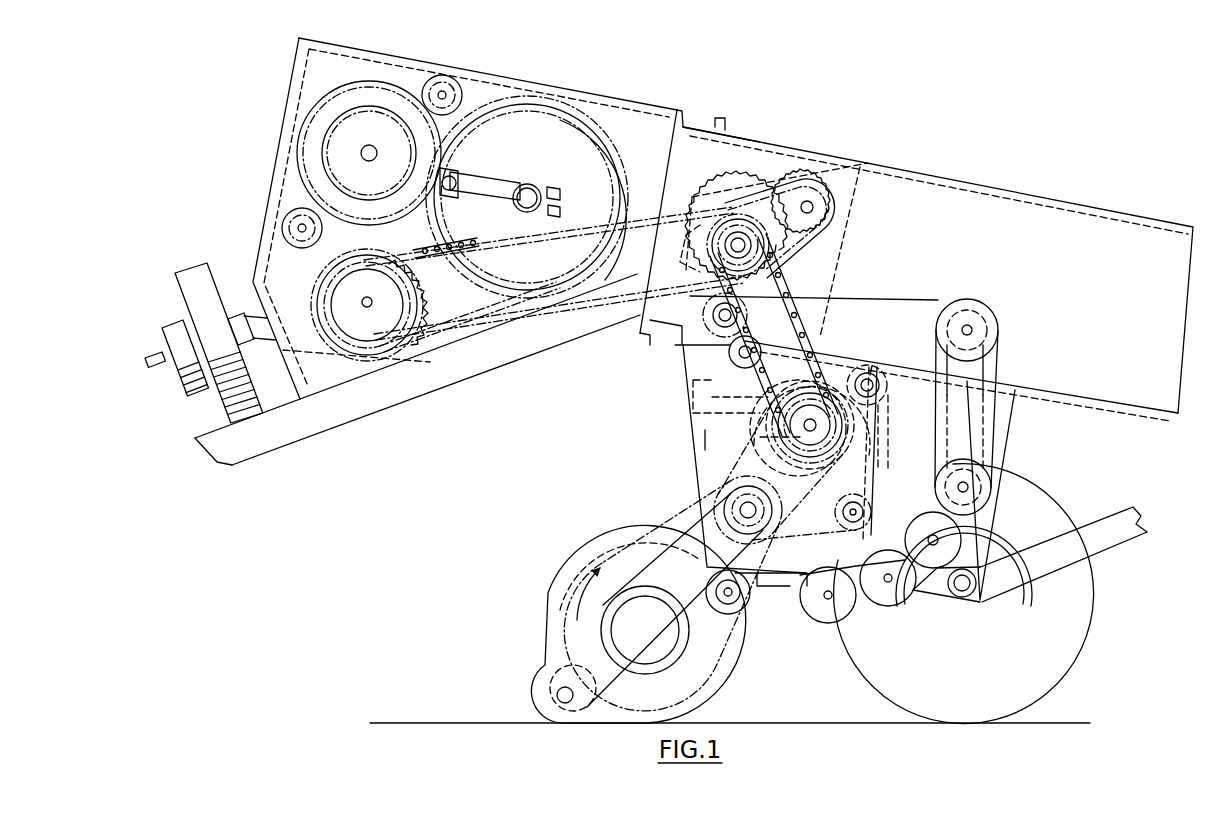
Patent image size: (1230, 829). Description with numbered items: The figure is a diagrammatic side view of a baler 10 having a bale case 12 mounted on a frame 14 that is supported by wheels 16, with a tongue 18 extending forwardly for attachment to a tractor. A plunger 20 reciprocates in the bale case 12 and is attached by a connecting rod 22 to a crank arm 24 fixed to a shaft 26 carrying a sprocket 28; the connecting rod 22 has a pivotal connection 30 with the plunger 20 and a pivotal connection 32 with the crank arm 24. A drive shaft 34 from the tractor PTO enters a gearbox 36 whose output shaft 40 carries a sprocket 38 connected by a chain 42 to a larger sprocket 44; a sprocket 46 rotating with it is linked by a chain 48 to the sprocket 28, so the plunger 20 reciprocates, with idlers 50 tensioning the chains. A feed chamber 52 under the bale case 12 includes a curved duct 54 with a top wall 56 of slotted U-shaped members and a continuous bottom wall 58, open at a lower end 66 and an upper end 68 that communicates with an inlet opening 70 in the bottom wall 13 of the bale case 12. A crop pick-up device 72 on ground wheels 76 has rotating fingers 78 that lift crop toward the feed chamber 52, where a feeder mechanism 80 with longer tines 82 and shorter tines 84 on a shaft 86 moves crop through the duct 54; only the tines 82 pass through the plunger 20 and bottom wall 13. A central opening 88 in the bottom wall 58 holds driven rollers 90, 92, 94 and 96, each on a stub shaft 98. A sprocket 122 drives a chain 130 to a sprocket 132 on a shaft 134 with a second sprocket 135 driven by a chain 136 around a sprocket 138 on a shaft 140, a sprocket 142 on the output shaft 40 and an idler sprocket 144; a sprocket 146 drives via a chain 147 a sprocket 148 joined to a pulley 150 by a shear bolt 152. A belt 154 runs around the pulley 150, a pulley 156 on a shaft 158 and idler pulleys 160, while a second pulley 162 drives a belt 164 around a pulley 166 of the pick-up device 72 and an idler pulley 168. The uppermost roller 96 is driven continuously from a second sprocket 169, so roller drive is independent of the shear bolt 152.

The baler 10 is at (803, 147).
The bale case 12 is at (940, 178).
The bottom wall 13 is at (1050, 391).
The frame 14 is at (1110, 515).
The wheels 16 is at (1095, 600).
The tongue 18 is at (337, 424).
The plunger 20 is at (845, 229).
The connecting rod 22 is at (588, 196).
The crank arm 24 is at (530, 177).
The shaft 26 is at (518, 203).
The sprocket 28 is at (582, 104).
The pivotal connection 30 is at (800, 250).
The pivotal connection 32 is at (456, 175).
The drive shaft 34 is at (163, 373).
The gearbox 36 is at (318, 358).
The sprocket 38 is at (328, 326).
The output shaft 40 is at (367, 305).
The chain 42 is at (312, 262).
The sprocket 44 is at (321, 109).
The sprocket 46 is at (393, 123).
The chain 48 is at (452, 105).
The idlers 50 is at (447, 78).
The feed chamber 52 is at (690, 398).
The curved duct 54 is at (916, 448).
The top wall 56 is at (812, 440).
The bottom wall 58 is at (758, 575).
The lower end 66 is at (686, 468).
The upper end 68 is at (903, 388).
The inlet opening 70 is at (924, 364).
The crop pick-up device 72 is at (546, 600).
The ground wheels 76 is at (545, 693).
The fingers 78 is at (593, 564).
The feeder mechanism 80 is at (705, 439).
The tines 82 is at (805, 383).
The tines 84 is at (772, 405).
The shaft 86 is at (758, 437).
The central opening 88 is at (873, 549).
The roller 90 is at (822, 616).
The roller 92 is at (880, 604).
The roller 94 is at (952, 546).
The roller 96 is at (985, 491).
The stub shaft 98 is at (968, 485).
The sprocket 122 is at (1000, 330).
The chain 130 is at (905, 298).
The sprocket 132 is at (704, 311).
The shaft 134 is at (729, 347).
The second sprocket 135 is at (666, 352).
The chain 136 is at (637, 228).
The sprocket 138 is at (700, 268).
The shaft 140 is at (736, 242).
The sprocket 142 is at (395, 303).
The idler sprocket 144 is at (832, 207).
The sprocket 146 is at (742, 232).
The chain 147 is at (812, 316).
The sprocket 148 is at (880, 399).
The pulley 150 is at (760, 458).
The shear bolt 152 is at (882, 430).
The belt 154 is at (834, 512).
The pulley 156 is at (778, 541).
The shaft 158 is at (738, 507).
The idler pulleys 160 is at (872, 364).
The second pulley 162 is at (683, 520).
The belt 164 is at (670, 638).
The pulley 166 is at (700, 617).
The idler pulley 168 is at (746, 606).
The second sprocket 169 is at (983, 322).